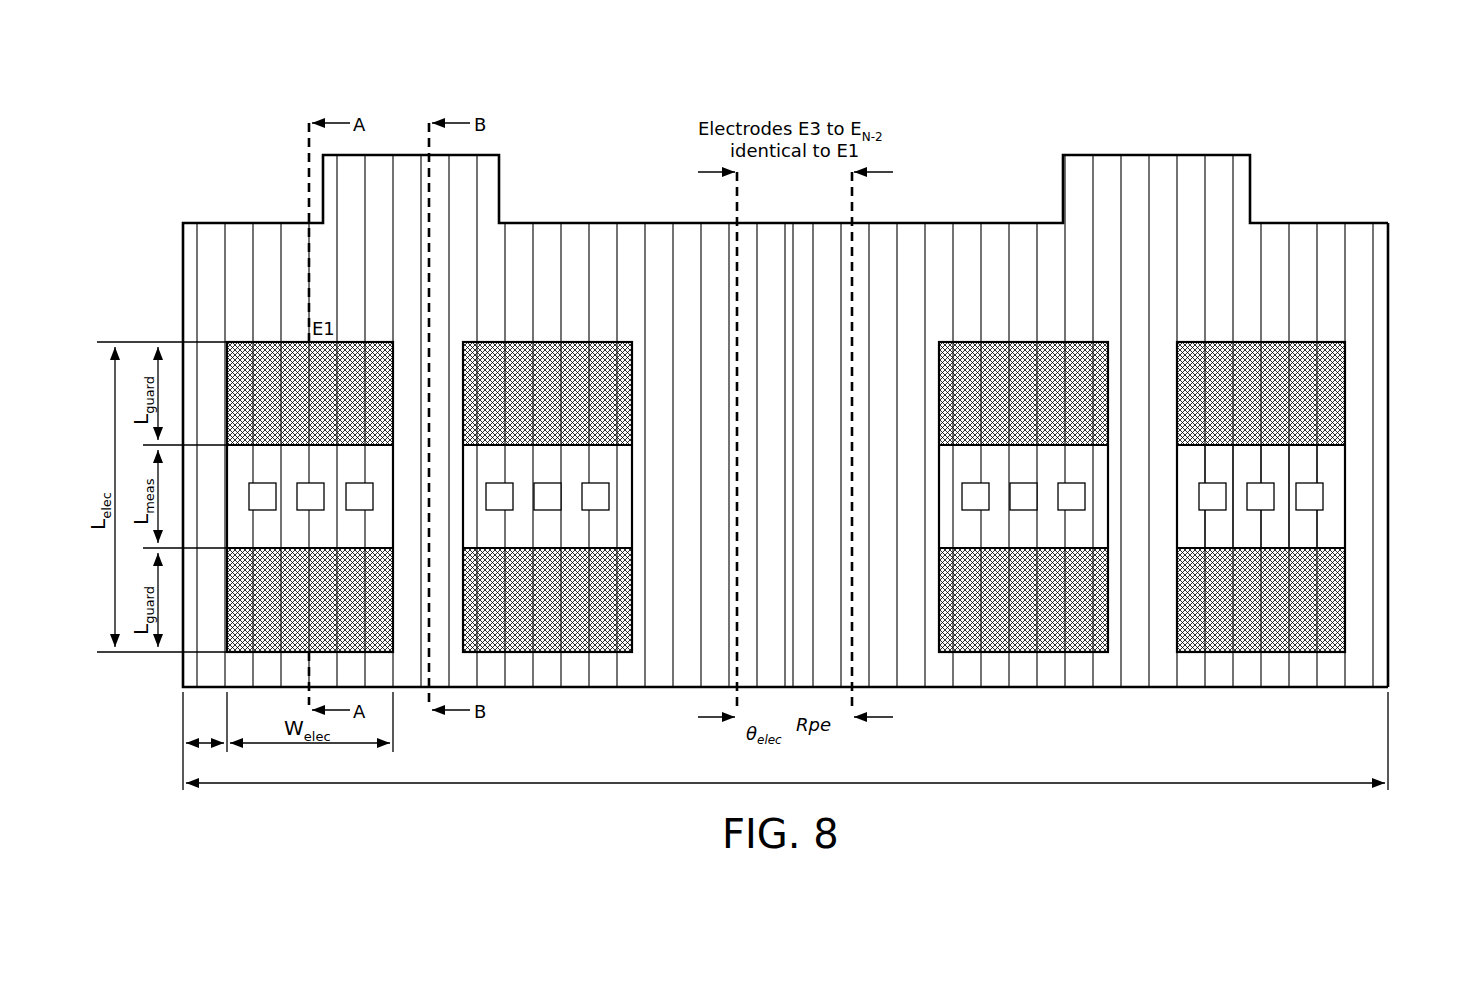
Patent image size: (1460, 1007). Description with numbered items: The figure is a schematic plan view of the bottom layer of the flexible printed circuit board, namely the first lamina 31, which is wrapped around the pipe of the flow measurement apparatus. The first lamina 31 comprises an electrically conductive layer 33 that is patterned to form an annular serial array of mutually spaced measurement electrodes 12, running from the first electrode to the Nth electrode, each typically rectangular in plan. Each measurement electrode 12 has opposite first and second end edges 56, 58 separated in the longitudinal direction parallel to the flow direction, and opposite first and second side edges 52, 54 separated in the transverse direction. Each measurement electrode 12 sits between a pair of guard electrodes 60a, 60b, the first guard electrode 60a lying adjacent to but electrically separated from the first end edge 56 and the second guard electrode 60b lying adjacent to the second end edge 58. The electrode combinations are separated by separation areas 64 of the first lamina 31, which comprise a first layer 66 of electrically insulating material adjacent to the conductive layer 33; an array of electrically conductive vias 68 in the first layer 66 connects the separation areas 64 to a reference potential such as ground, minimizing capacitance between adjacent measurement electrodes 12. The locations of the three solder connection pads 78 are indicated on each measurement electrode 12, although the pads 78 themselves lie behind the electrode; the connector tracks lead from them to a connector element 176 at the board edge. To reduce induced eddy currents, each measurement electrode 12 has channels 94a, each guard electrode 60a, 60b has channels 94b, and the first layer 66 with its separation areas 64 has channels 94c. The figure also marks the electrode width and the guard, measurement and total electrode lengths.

The first lamina 31 is at (1095, 112).
The connector element 176 is at (1188, 154).
The channels in first insulating layer and separation areas 94c is at (930, 240).
The first layer of electrically insulating material 66 is at (1366, 250).
The electrically conductive vias 68 is at (1376, 322).
The first guard electrode 60a is at (1340, 373).
The first end edge 56 is at (1340, 437).
The measurement electrode 12 is at (1338, 473).
The connection pad 78 is at (1318, 497).
The second side edge 54 is at (1348, 523).
The second end edge 58 is at (1333, 558).
The second guard electrode 60b is at (1335, 622).
The separation area 64 is at (1138, 473).
The first side edge 52 is at (1177, 540).
The electrically conductive layer 33 is at (1253, 540).
The measurement electrode channels 94a is at (480, 533).
The guard electrode channels 94b is at (563, 412).